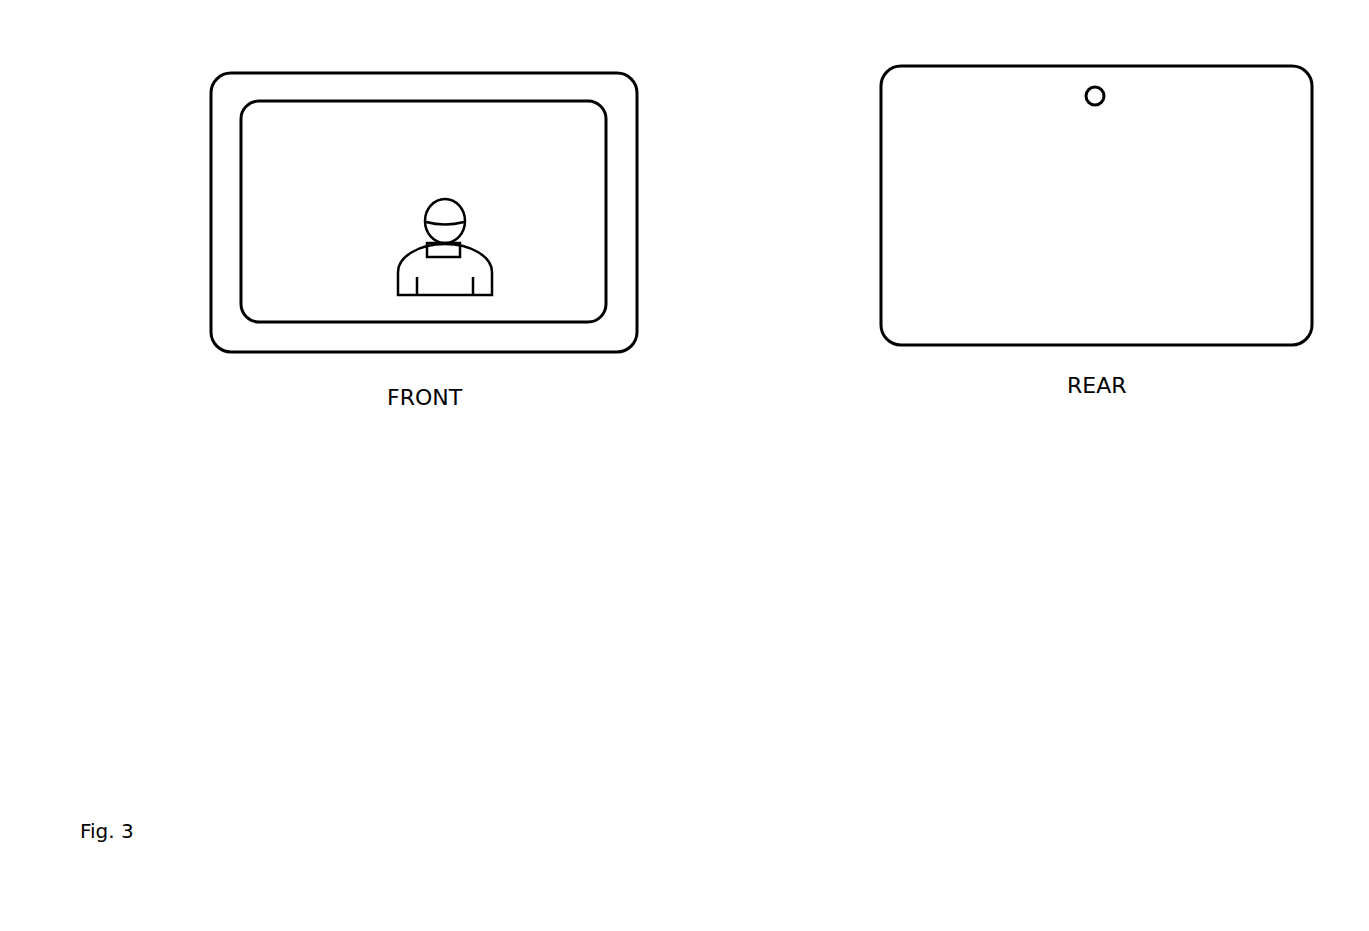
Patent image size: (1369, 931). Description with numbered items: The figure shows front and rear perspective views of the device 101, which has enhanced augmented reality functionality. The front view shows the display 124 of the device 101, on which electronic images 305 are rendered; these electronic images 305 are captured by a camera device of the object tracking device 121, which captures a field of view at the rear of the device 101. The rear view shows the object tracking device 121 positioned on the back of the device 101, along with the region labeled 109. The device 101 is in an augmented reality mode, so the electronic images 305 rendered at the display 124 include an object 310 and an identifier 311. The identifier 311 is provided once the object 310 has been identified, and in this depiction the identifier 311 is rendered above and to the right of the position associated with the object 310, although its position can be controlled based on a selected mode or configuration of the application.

The device 101 is at (761, 209).
The rear housing of device 109 is at (970, 308).
The object tracking device 121 is at (1101, 88).
The display 124 is at (564, 132).
The electronic images 305 is at (378, 182).
The object 310 is at (400, 258).
The identifier 311 is at (516, 204).